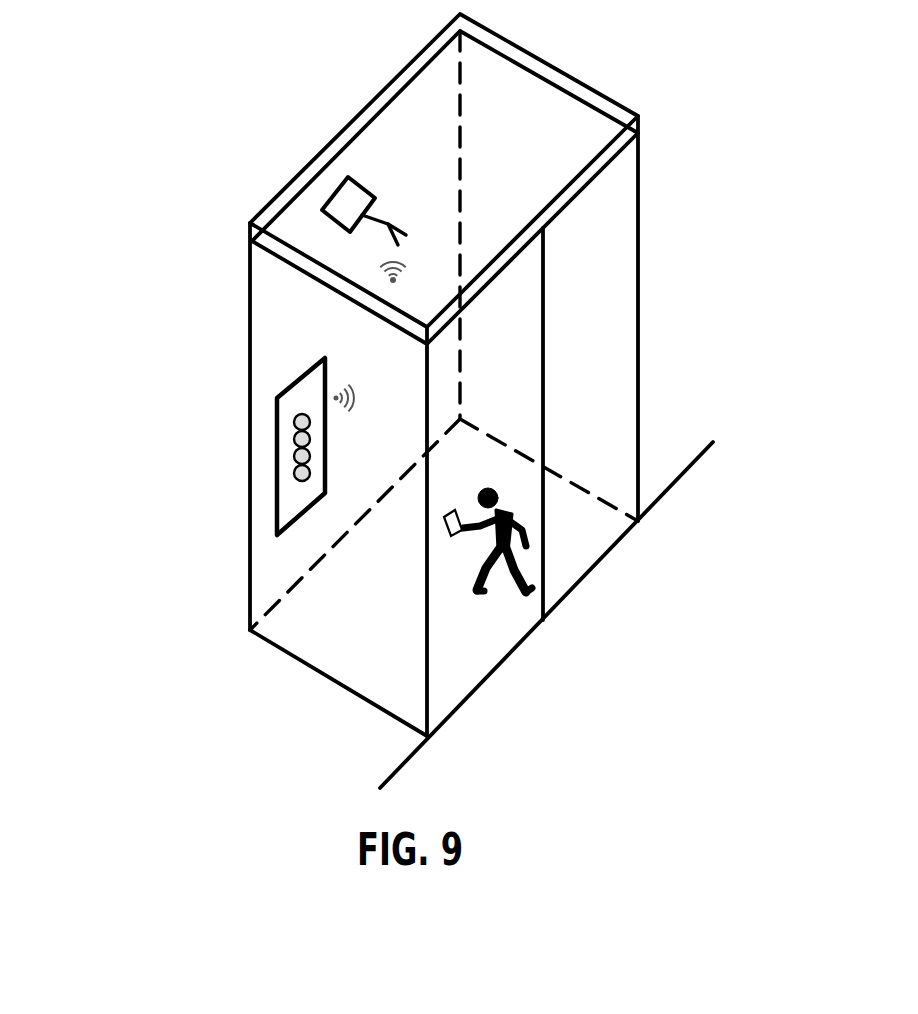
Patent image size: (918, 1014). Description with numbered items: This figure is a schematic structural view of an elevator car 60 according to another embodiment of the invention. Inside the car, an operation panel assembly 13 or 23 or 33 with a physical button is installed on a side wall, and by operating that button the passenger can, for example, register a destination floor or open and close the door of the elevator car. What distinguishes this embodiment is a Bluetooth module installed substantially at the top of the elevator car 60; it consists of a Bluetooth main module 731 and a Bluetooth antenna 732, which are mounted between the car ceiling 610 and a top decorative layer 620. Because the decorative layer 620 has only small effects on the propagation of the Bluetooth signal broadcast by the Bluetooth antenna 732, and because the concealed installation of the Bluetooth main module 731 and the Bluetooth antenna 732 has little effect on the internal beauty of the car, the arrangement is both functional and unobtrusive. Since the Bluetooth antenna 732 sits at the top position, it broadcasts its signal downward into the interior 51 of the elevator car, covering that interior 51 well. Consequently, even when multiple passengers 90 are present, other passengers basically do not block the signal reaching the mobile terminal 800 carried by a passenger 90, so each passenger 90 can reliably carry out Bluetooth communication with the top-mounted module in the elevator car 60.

The elevator car 60 is at (511, 397).
The car ceiling 610 is at (574, 86).
The top decorative layer 620 is at (617, 161).
The interior of the elevator car 51 is at (637, 242).
The operation panel assembly 13 is at (200, 446).
The operation panel assembly 23 is at (200, 446).
The operation panel assembly 33 is at (273, 410).
The Bluetooth main module 731 is at (372, 194).
The Bluetooth antenna 732 is at (394, 221).
The passenger 90 is at (524, 512).
The mobile terminal 800 is at (447, 516).